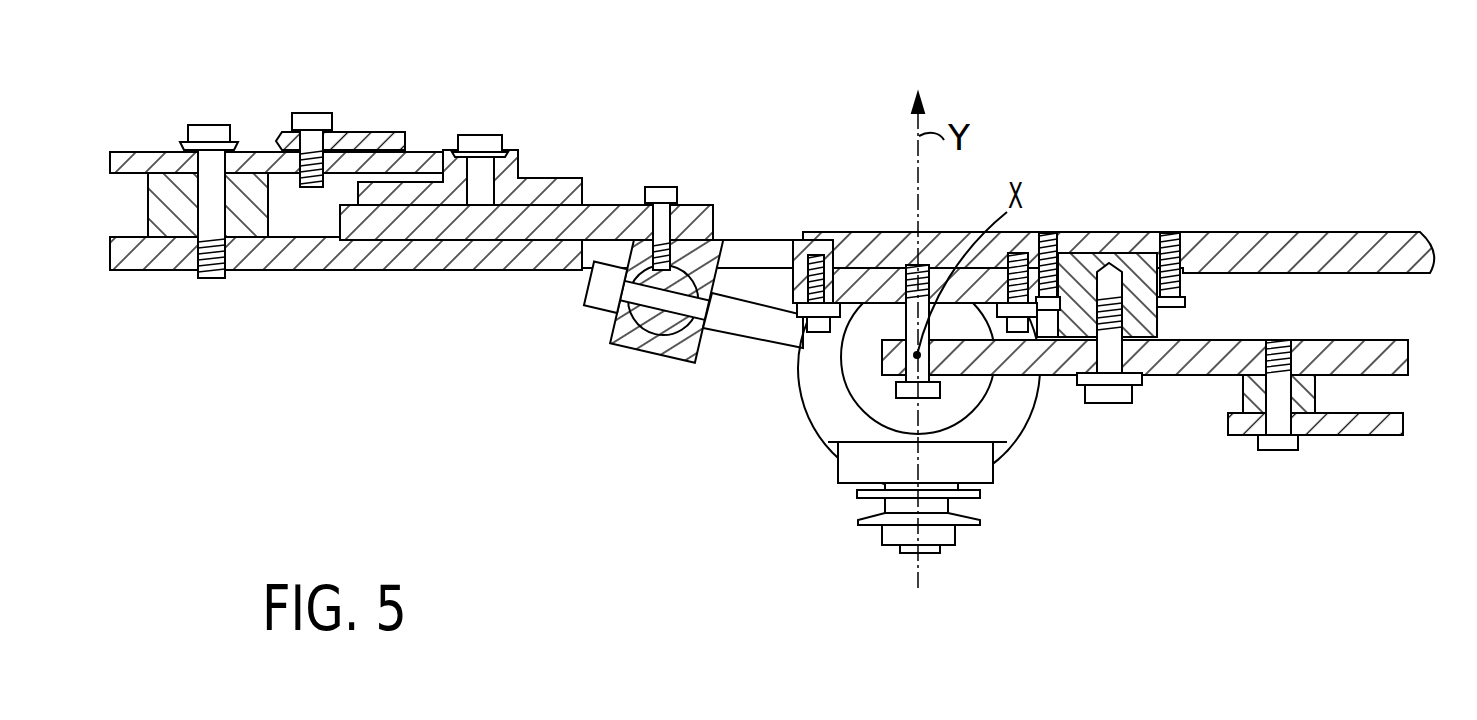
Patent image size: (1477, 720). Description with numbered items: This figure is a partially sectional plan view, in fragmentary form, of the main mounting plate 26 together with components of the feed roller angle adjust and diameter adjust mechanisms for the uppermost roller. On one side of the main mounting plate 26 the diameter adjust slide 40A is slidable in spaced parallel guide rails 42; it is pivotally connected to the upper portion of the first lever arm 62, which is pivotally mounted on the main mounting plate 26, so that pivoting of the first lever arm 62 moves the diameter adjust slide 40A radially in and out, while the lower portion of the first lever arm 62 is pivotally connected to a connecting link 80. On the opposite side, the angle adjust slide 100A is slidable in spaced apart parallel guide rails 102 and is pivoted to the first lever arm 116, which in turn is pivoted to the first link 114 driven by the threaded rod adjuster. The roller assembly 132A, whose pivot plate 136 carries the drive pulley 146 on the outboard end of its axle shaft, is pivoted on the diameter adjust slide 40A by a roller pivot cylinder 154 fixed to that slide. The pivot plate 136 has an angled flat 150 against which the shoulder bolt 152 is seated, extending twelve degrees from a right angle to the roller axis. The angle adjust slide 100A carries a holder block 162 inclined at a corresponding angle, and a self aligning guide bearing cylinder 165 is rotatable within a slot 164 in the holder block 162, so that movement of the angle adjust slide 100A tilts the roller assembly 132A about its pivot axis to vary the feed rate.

The first link 114 is at (385, 129).
The first lever arm 116 is at (425, 148).
The guide rails 102 is at (537, 175).
The angle adjust slide 100A is at (602, 204).
The guide rails 42 is at (778, 268).
The diameter adjust slide 40A is at (858, 268).
The main mounting plate 26 is at (1277, 240).
The self aligning guide bearing cylinder 165 is at (590, 291).
The holder block 162 is at (600, 345).
The slot 164 is at (660, 338).
The shoulder bolt 152 is at (740, 325).
The angled flat 150 is at (798, 390).
The pivot plate 136 is at (828, 403).
The roller assembly 132A is at (817, 487).
The roller pivot cylinder 154 is at (977, 413).
The drive pulley 146 is at (967, 543).
The first lever arm 62 is at (1187, 378).
The connecting link 80 is at (1347, 430).